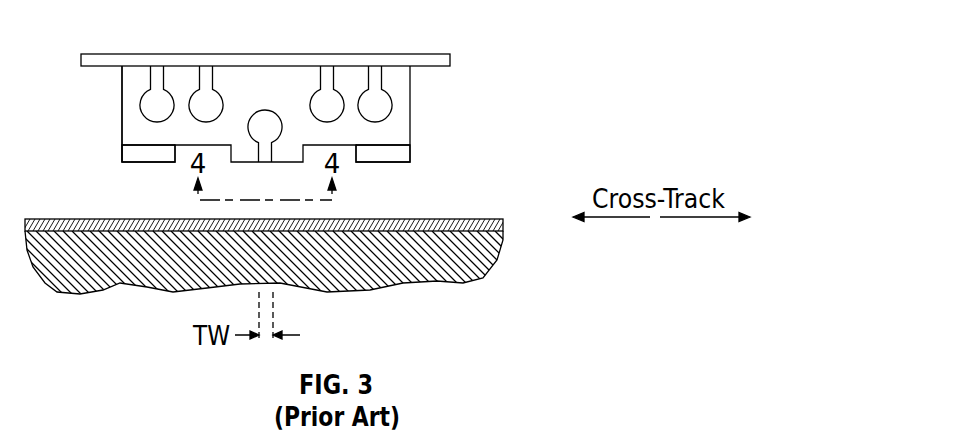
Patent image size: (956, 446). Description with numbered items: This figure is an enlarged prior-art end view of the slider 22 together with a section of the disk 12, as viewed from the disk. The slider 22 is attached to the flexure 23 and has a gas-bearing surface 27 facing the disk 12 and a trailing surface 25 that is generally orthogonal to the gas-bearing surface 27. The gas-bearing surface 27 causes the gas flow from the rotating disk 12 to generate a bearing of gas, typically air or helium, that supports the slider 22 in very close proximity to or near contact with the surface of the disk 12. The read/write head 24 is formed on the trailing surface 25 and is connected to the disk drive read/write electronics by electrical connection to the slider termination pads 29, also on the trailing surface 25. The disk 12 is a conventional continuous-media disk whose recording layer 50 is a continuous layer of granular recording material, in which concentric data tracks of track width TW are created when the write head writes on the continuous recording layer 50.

The disk 12 is at (488, 255).
The slider 22 is at (410, 135).
The flexure 23 is at (436, 54).
The read/write head 24 is at (263, 112).
The trailing surface 25 is at (127, 132).
The gas-bearing surface 27 is at (150, 163).
The slider termination pads 29 is at (193, 105).
The recording layer 50 is at (453, 219).